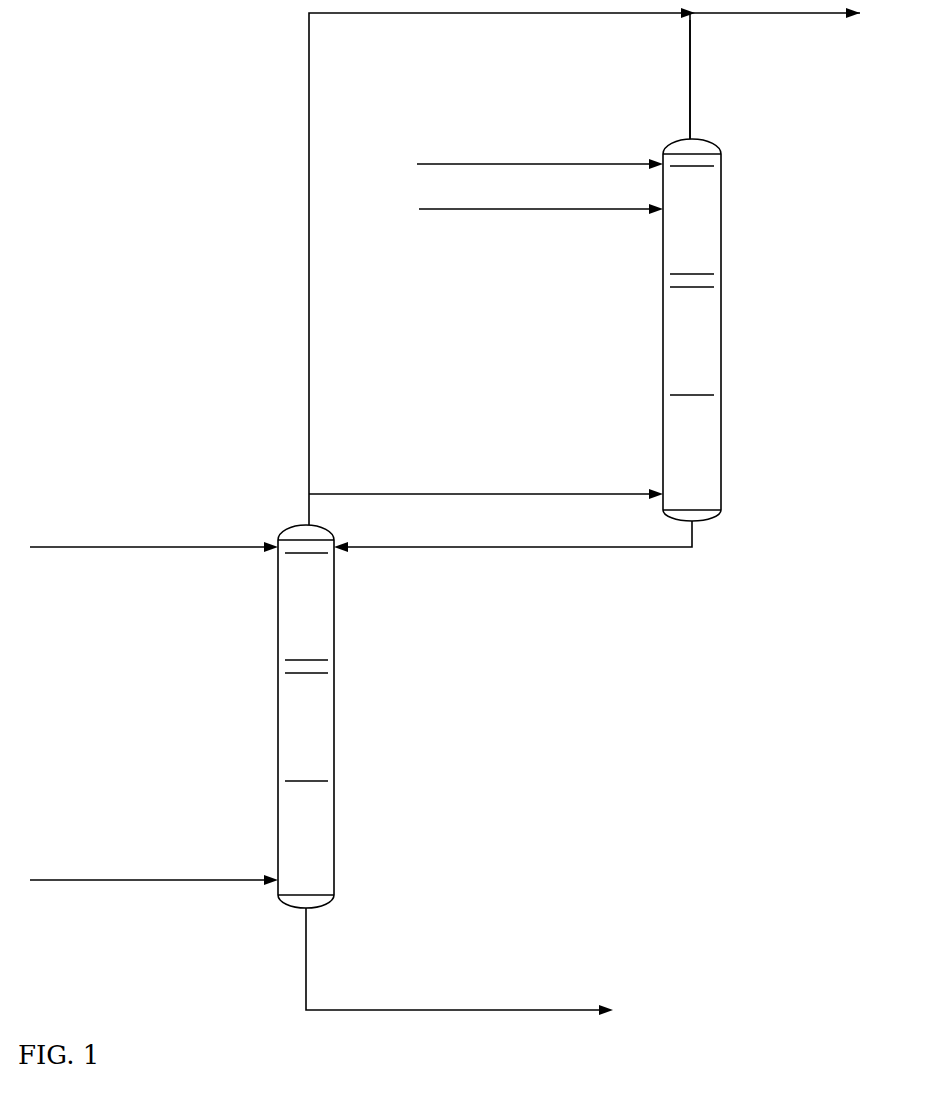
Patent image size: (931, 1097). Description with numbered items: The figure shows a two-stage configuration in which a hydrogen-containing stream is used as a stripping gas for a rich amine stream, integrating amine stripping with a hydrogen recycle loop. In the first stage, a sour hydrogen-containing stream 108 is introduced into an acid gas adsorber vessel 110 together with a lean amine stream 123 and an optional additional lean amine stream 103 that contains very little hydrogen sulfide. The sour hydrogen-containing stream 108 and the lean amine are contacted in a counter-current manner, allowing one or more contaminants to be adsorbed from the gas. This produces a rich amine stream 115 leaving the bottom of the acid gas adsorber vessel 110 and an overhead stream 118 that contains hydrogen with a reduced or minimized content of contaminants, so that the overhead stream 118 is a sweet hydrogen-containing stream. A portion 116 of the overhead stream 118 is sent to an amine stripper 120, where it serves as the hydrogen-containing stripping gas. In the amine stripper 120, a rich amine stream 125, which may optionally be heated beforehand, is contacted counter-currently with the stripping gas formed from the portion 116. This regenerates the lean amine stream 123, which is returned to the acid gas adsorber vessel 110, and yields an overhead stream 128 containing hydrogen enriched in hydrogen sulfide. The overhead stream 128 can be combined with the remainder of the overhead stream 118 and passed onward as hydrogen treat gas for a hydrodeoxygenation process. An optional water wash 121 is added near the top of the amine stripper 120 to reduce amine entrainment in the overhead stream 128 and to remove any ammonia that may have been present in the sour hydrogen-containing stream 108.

The additional lean amine stream 103 is at (197, 527).
The sour hydrogen-containing stream 108 is at (97, 862).
The acid gas adsorber vessel 110 is at (355, 761).
The rich amine stream 115 is at (465, 990).
The portion of overhead stream 116 is at (536, 481).
The overhead stream 118 is at (293, 420).
The amine stripper 120 is at (759, 360).
The water wash 121 is at (605, 150).
The lean amine stream 123 is at (528, 567).
The rich amine stream 125 is at (432, 197).
The overhead stream 128 is at (715, 103).